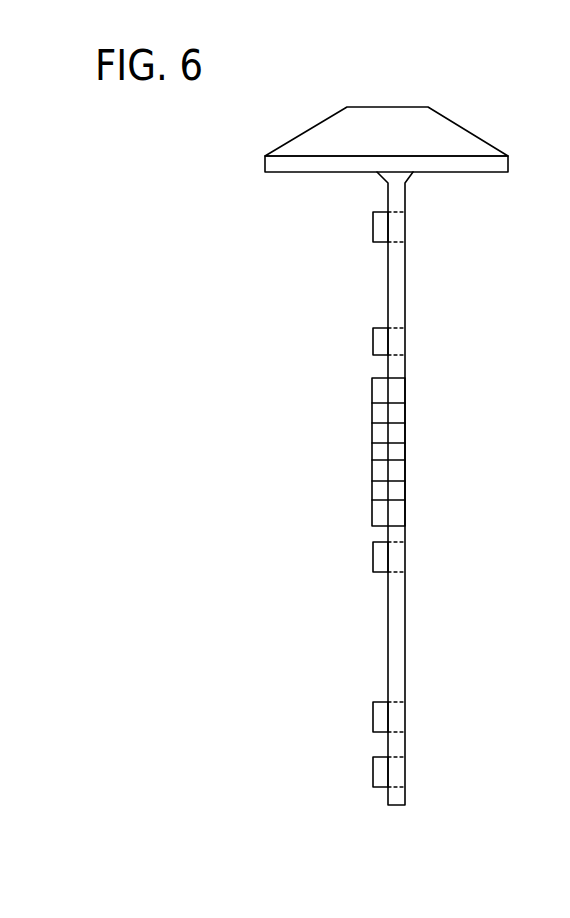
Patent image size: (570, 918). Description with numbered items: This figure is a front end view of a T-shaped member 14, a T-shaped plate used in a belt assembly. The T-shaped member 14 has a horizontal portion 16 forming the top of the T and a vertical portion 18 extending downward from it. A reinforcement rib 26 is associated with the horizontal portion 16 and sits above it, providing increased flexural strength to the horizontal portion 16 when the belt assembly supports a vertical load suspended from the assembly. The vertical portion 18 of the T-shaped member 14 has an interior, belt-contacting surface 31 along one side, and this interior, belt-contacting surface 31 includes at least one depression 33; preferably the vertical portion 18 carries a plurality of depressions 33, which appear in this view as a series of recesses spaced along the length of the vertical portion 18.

The T-shaped member 14 is at (176, 201).
The horizontal portion 16 is at (468, 153).
The vertical portion 18 is at (405, 343).
The reinforcement rib 26 is at (383, 125).
The interior belt-contacting surface 31 is at (378, 362).
The depressions 33 is at (378, 253).